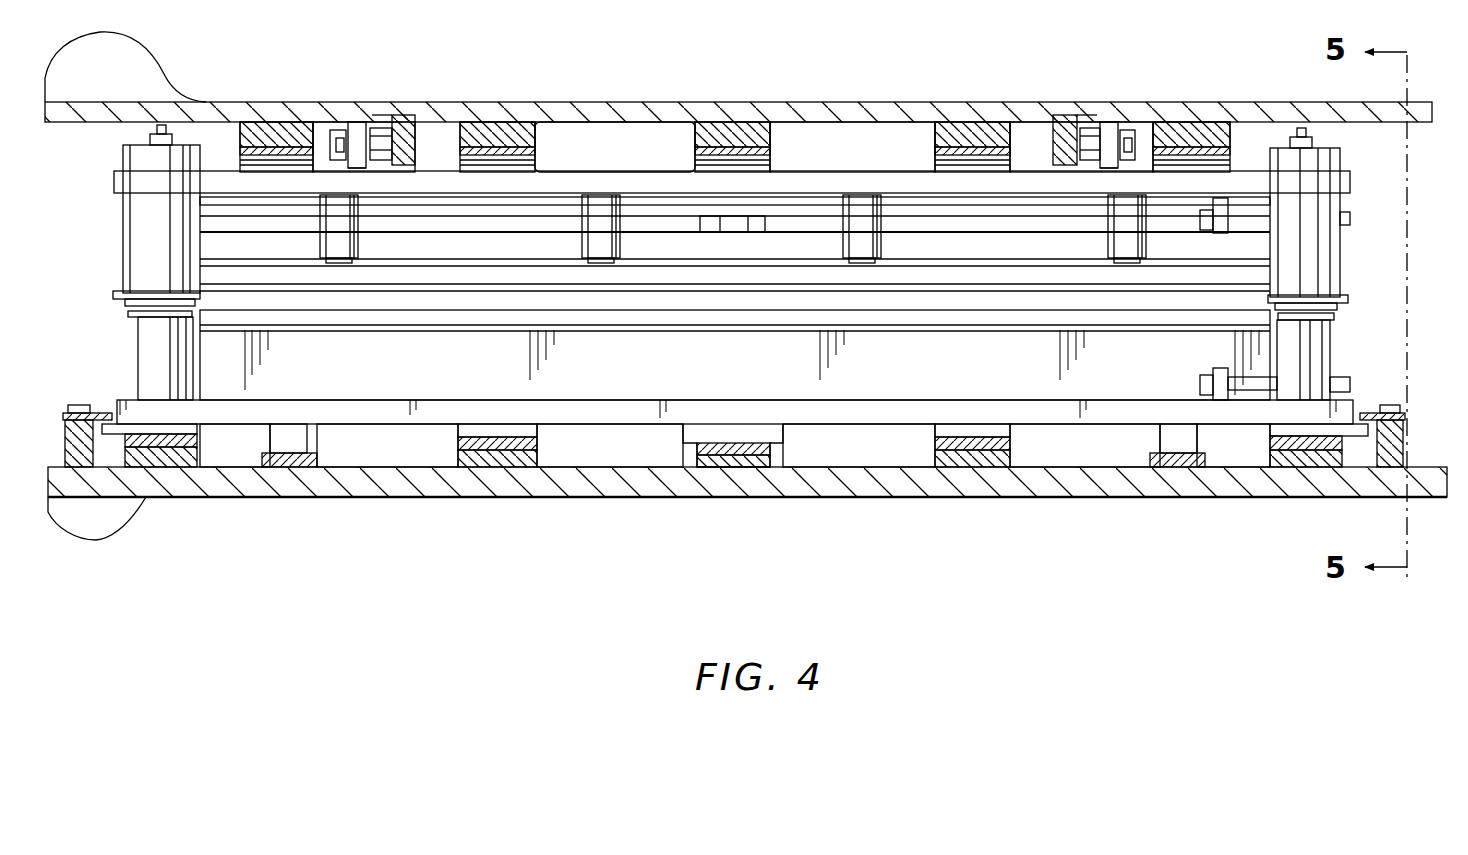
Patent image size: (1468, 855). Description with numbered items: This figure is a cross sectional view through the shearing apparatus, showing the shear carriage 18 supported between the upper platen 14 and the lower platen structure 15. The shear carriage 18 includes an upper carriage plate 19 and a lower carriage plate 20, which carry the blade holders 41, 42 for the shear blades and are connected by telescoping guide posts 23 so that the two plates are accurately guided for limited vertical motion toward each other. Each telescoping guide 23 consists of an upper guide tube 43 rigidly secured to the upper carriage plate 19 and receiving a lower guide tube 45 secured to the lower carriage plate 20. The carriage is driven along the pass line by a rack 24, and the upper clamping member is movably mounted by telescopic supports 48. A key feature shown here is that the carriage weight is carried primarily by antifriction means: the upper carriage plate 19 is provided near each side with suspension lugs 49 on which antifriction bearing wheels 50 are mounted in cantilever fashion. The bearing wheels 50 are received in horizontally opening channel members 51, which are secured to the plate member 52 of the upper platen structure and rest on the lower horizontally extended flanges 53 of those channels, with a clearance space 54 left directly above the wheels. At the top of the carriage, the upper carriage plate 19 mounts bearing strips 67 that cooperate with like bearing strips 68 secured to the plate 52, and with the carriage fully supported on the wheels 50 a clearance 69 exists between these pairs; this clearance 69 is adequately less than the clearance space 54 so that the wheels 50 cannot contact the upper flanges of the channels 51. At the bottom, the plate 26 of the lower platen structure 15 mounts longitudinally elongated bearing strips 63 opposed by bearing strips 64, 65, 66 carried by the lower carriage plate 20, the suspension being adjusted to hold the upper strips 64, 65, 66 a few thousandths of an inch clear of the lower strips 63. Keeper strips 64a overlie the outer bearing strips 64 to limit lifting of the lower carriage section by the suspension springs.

The upper platen 14 is at (738, 77).
The lower platen structure 15 is at (747, 506).
The shear carriage 18 is at (728, 352).
The upper carriage plate 19 is at (600, 176).
The lower carriage plate 20 is at (328, 405).
The telescoping guide posts 23 is at (160, 258).
The rack 24 is at (300, 440).
The plate of the lower platen structure 26 is at (612, 486).
The blade holder 41 is at (512, 255).
The blade holder 42 is at (877, 342).
The upper guide tubes 43 is at (1315, 236).
The lower guide tubes 45 is at (1320, 350).
The telescopic supports 48 is at (620, 245).
The suspension lugs 49 is at (358, 128).
The antifriction bearing wheels 50 is at (386, 130).
The channel members 51 is at (418, 140).
The plate member of the upper platen structure 52 is at (600, 106).
The lower horizontally extended flanges 53 is at (383, 168).
The clearance space 54 is at (1090, 125).
The bearing strips 63 is at (178, 458).
The outer bearing strips 64 is at (185, 428).
The keeper strips 64a is at (100, 410).
The bearing strips 65 is at (495, 425).
The bearing strips 66 is at (752, 430).
The bearing strips 67 is at (258, 165).
The bearing strips 68 is at (285, 122).
The clearance 69 is at (775, 152).